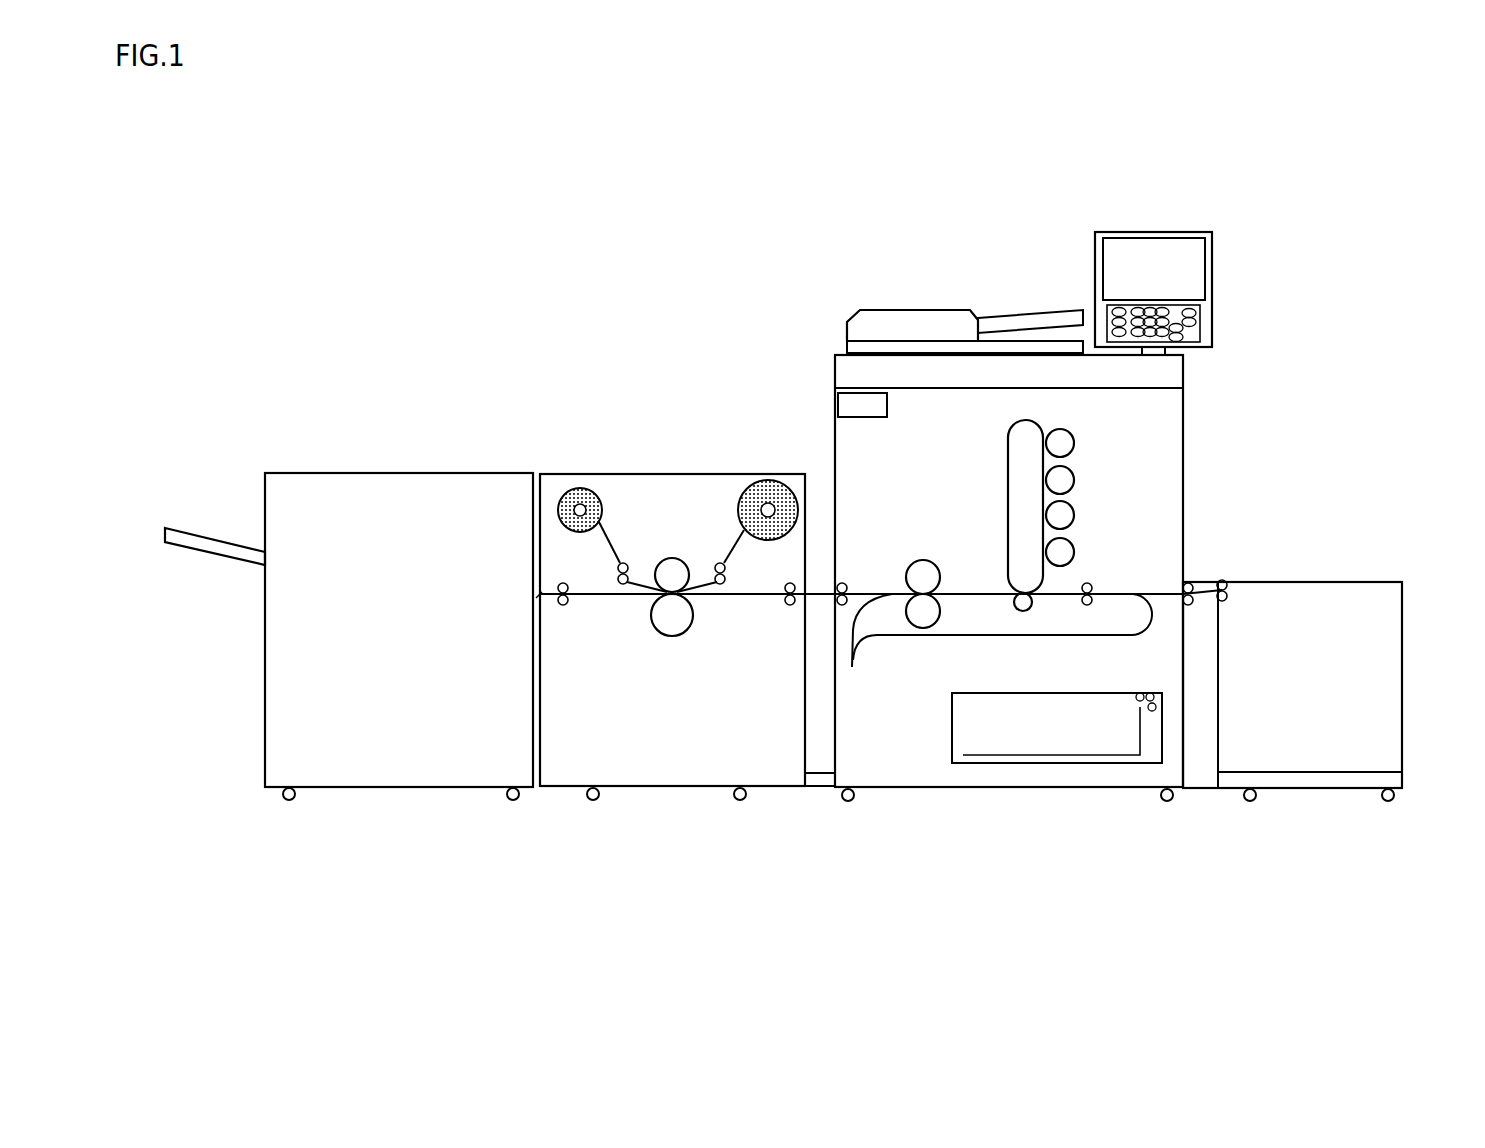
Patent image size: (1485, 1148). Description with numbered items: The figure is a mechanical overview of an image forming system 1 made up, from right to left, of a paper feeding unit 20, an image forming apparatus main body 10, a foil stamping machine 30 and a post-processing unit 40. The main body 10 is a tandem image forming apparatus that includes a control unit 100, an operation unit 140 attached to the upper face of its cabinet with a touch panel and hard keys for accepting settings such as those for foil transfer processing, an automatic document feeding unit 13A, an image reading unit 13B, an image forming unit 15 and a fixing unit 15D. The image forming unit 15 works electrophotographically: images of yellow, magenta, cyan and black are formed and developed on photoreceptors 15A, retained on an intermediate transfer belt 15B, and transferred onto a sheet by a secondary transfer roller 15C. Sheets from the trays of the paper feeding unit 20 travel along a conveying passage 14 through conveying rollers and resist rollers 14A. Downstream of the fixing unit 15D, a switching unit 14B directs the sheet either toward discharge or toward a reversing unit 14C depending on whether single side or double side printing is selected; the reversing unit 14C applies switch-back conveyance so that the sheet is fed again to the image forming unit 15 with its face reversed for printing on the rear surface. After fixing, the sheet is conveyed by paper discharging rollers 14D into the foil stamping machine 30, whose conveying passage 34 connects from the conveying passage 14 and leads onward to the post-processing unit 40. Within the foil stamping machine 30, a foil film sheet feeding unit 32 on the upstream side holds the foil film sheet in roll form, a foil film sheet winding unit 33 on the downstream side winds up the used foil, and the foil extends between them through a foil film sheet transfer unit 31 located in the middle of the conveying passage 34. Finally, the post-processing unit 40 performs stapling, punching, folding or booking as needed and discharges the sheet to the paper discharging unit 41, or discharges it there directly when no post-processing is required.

The image forming system 1 is at (853, 958).
The image forming apparatus main body 10 is at (1051, 648).
The control unit 100 is at (836, 360).
The automatic document feeding unit 13A is at (850, 312).
The image reading unit 13B is at (857, 372).
The operation unit 140 is at (1135, 247).
The conveying passage 14 is at (1160, 593).
The resist rollers 14A is at (1090, 586).
The switching unit 14B is at (890, 593).
The reversing unit 14C is at (1002, 663).
The paper discharging rollers 14D is at (846, 587).
The image forming unit 15 is at (977, 416).
The photoreceptors 15A is at (1074, 430).
The intermediate transfer belt 15B is at (1005, 503).
The secondary transfer roller 15C is at (1010, 593).
The fixing unit 15D is at (880, 530).
The paper feeding unit 20 is at (1326, 624).
The foil stamping machine 30 is at (594, 511).
The foil film sheet transfer unit 31 is at (663, 663).
The foil film sheet feeding unit 32 is at (723, 448).
The foil film sheet winding unit 33 is at (477, 417).
The conveying passage 34 is at (742, 597).
The post-processing unit 40 is at (399, 594).
The paper discharging unit 41 is at (187, 455).